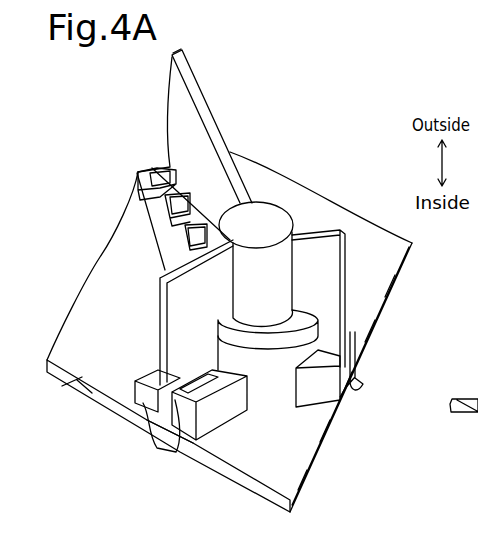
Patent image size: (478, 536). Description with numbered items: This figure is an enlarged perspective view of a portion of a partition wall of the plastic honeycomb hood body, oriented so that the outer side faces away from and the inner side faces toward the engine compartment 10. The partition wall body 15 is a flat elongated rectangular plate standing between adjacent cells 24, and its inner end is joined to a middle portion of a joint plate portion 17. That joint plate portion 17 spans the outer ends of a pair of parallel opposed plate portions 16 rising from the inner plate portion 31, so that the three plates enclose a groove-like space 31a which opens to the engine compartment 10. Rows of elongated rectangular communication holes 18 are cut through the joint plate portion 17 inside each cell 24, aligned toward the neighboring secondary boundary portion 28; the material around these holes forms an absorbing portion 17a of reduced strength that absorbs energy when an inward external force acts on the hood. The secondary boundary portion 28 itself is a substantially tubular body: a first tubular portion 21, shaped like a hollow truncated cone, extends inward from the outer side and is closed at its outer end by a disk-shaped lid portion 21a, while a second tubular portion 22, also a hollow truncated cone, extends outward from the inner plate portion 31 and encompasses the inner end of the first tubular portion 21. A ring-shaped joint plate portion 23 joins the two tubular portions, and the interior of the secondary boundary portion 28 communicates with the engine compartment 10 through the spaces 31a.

The engine compartment 10 is at (101, 494).
The partition wall body 15 is at (192, 80).
The opposed plate portion 16 is at (178, 434).
The joint plate portion 17 is at (140, 173).
The absorbing portion 17a is at (218, 372).
The communication hole 18 is at (186, 222).
The first tubular portion 21 is at (293, 268).
The lid portion 21a is at (276, 207).
The second tubular portion 22 is at (292, 400).
The joint plate portion 23 is at (230, 328).
The cell 24 is at (107, 364).
The secondary boundary portion 28 is at (322, 195).
The inner plate portion 31 is at (312, 448).
The groove-like space 31a is at (172, 448).